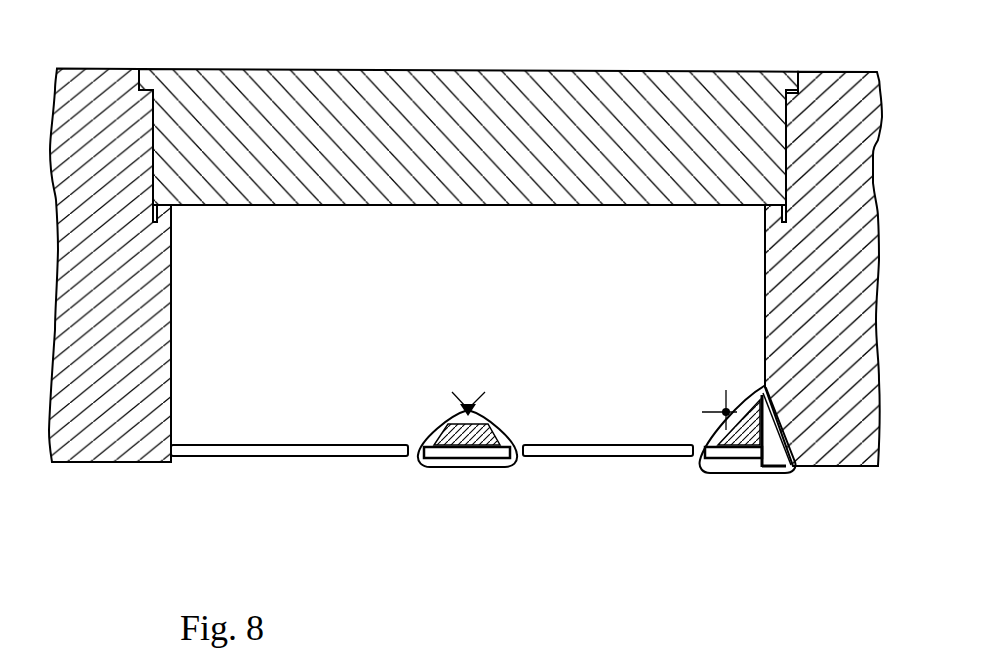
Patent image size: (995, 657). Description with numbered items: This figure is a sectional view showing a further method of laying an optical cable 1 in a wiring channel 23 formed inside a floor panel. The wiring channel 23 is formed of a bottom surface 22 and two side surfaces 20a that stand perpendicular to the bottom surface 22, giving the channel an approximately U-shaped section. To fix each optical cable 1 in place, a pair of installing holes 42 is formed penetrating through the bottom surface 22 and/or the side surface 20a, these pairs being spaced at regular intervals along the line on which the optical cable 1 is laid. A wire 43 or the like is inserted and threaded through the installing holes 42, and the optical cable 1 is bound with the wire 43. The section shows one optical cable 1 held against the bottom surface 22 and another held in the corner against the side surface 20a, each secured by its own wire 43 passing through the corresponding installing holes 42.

The optical cable 1 is at (445, 427).
The side surface 20a is at (765, 303).
The bottom surface 22 is at (608, 447).
The wiring channel 23 is at (637, 232).
The installing holes 42 is at (415, 453).
The wire 43 is at (495, 421).